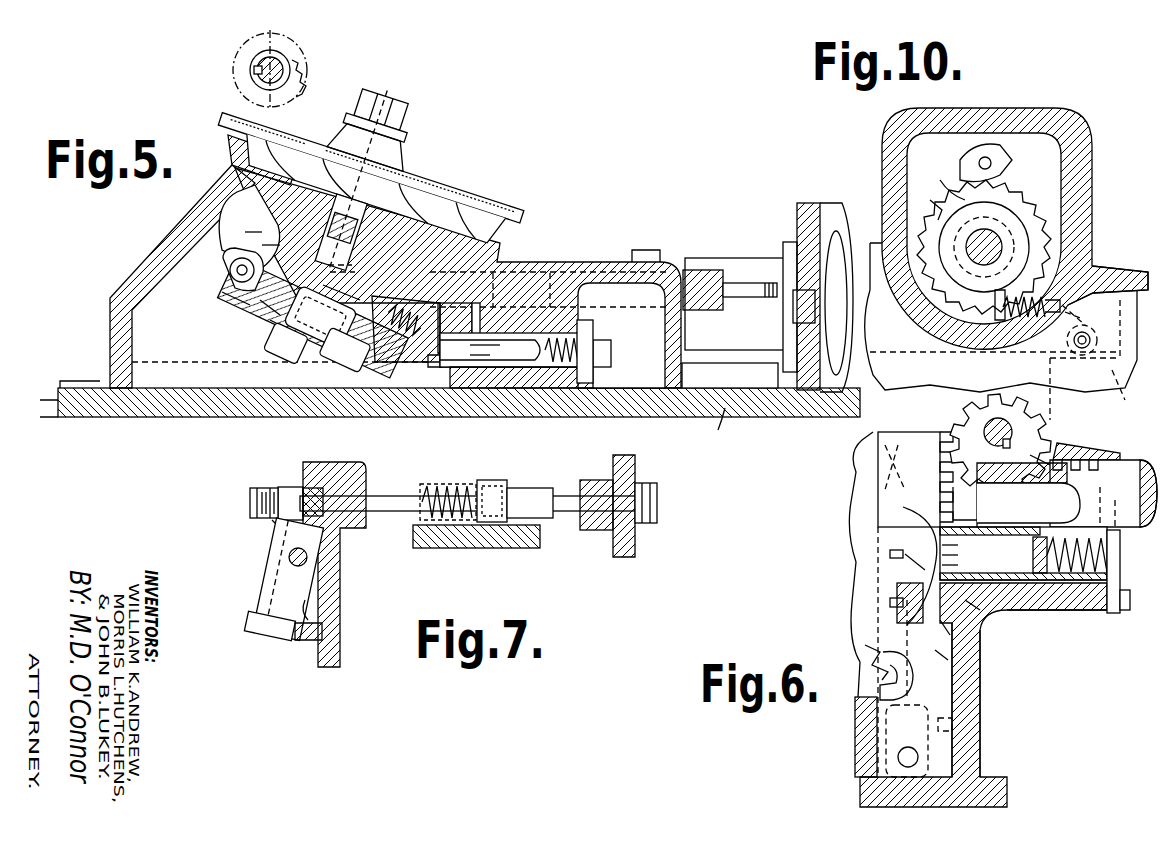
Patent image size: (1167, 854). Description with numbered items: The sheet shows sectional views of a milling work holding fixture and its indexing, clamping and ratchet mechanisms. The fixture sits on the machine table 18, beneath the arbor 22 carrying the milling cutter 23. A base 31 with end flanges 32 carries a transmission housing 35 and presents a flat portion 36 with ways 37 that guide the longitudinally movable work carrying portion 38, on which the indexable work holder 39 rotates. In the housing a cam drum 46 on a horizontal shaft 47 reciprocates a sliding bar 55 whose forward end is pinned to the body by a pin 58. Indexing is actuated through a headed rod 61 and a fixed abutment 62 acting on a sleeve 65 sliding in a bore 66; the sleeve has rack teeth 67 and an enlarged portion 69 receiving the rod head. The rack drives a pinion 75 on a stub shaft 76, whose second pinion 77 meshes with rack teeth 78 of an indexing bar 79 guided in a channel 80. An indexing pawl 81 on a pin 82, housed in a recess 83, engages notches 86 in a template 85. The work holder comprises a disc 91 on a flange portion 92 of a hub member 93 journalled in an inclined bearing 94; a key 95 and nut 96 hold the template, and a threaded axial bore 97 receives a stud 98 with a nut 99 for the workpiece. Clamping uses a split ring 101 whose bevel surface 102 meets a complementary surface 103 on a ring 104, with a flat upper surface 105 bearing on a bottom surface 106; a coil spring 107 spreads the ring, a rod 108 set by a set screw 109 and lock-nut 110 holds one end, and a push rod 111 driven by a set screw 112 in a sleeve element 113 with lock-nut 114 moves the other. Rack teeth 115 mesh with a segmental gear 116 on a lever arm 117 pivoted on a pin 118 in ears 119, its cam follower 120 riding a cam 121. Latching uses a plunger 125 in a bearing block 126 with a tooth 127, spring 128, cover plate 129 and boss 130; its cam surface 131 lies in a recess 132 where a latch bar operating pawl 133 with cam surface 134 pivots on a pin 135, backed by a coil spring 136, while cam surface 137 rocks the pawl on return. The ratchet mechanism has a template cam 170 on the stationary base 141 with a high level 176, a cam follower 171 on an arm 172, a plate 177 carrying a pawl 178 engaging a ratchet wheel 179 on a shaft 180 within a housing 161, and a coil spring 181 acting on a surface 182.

In FIG. 5, the table 18 is at (52, 416).
In FIG. 5, the arbor 22 is at (283, 59).
In FIG. 5, the milling cutter 23 is at (306, 86).
In FIG. 5, the base 31 is at (200, 412).
In FIG. 5, the end flanges 32 is at (72, 386).
In FIG. 5, the transmission housing 35 is at (818, 202).
In FIG. 5, the flat portion 36 is at (720, 362).
In FIG. 5, the ways 37 is at (733, 428).
In FIG. 5, the work carrying portion 38 is at (183, 224).
In FIG. 7, the work carrying portion 38 is at (345, 471).
In FIG. 6, the work carrying portion 38 is at (975, 689).
In FIG. 10, the work carrying portion 38 is at (1122, 272).
In FIG. 5, the work holder 39 is at (226, 140).
In FIG. 5, the cam drum 46 is at (795, 242).
In FIG. 5, the horizontal shaft 47 is at (796, 318).
In FIG. 5, the sliding bar 55 is at (728, 267).
In FIG. 5, the pin 58 is at (646, 250).
In FIG. 5, the headed rod 61 is at (742, 298).
In FIG. 5, the fixed abutment 62 is at (770, 298).
In FIG. 5, the sleeve 65 is at (705, 310).
In FIG. 6, the sleeve 65 is at (1125, 469).
In FIG. 6, the bore 66 is at (1107, 505).
In FIG. 6, the rack teeth 67 is at (1080, 454).
In FIG. 6, the enlarged portion 69 is at (1010, 485).
In FIG. 6, the pinion 75 is at (1036, 459).
In FIG. 6, the stub shaft 76 is at (1005, 454).
In FIG. 6, the second pinion 77 is at (958, 457).
In FIG. 6, the rack teeth 78 is at (965, 503).
In FIG. 5, the indexing bar 79 is at (475, 314).
In FIG. 6, the indexing bar 79 is at (915, 459).
In FIG. 5, the channel 80 is at (448, 304).
In FIG. 6, the channel 80 is at (858, 728).
In FIG. 6, the indexing pawl 81 is at (882, 662).
In FIG. 6, the pin 82 is at (908, 757).
In FIG. 6, the recess 83 is at (866, 648).
In FIG. 5, the template 85 is at (372, 365).
In FIG. 7, the template 85 is at (465, 548).
In FIG. 6, the template 85 is at (860, 489).
In FIG. 5, the notches 86 is at (215, 299).
In FIG. 6, the notches 86 is at (856, 624).
In FIG. 5, the disc 91 is at (500, 235).
In FIG. 5, the flange portion 92 is at (249, 226).
In FIG. 5, the hub member 93 is at (254, 224).
In FIG. 5, the bearing 94 is at (262, 239).
In FIG. 5, the key 95 is at (305, 323).
In FIG. 5, the nut 96 is at (272, 340).
In FIG. 5, the threaded axial bore 97 is at (357, 181).
In FIG. 5, the stud 98 is at (394, 97).
In FIG. 5, the nut 99 is at (415, 117).
In FIG. 5, the split ring 101 is at (230, 254).
In FIG. 7, the split ring 101 is at (512, 492).
In FIG. 5, the bevel surface 102 is at (353, 300).
In FIG. 5, the complementary surface 103 is at (262, 307).
In FIG. 5, the ring 104 is at (265, 327).
In FIG. 5, the flat upper surface 105 is at (360, 275).
In FIG. 5, the bottom surface 106 is at (361, 285).
In FIG. 5, the coil spring 107 is at (228, 267).
In FIG. 7, the coil spring 107 is at (455, 488).
In FIG. 7, the rod 108 is at (560, 520).
In FIG. 7, the set screw 109 is at (606, 532).
In FIG. 7, the lock-nut 110 is at (648, 490).
In FIG. 7, the push rod 111 is at (384, 512).
In FIG. 7, the set screw 112 is at (286, 486).
In FIG. 7, the sleeve element 113 is at (311, 486).
In FIG. 7, the lock-nut 114 is at (262, 486).
In FIG. 7, the rack teeth 115 is at (280, 520).
In FIG. 7, the segmental gear 116 is at (278, 530).
In FIG. 7, the lever arm 117 is at (270, 600).
In FIG. 7, the pin 118 is at (288, 562).
In FIG. 7, the ears 119 is at (315, 604).
In FIG. 7, the cam follower 120 is at (266, 632).
In FIG. 7, the cam 121 is at (302, 640).
In FIG. 5, the latching plunger 125 is at (470, 368).
In FIG. 6, the latching plunger 125 is at (1005, 535).
In FIG. 5, the bearing block 126 is at (512, 368).
In FIG. 6, the bearing block 126 is at (1068, 535).
In FIG. 5, the tooth 127 is at (434, 367).
In FIG. 6, the tooth 127 is at (890, 554).
In FIG. 5, the coil spring 128 is at (556, 390).
In FIG. 6, the coil spring 128 is at (1085, 612).
In FIG. 5, the cover plate 129 is at (595, 377).
In FIG. 6, the cover plate 129 is at (1118, 614).
In FIG. 6, the boss 130 is at (1050, 611).
In FIG. 5, the cam surface 131 is at (494, 355).
In FIG. 6, the cam surface 131 is at (966, 555).
In FIG. 5, the recess 132 is at (499, 341).
In FIG. 6, the recess 132 is at (950, 635).
In FIG. 6, the latch bar operating pawl 133 is at (950, 660).
In FIG. 6, the cam surface 134 is at (966, 567).
In FIG. 6, the pin 135 is at (955, 723).
In FIG. 6, the coil spring 136 is at (970, 615).
In FIG. 6, the cam surface 137 is at (966, 544).
In FIG. 10, the stationary base 141 is at (1088, 387).
In FIG. 10, the housing 161 is at (885, 143).
In FIG. 10, the template cam 170 is at (1128, 392).
In FIG. 10, the cam follower 171 is at (1095, 335).
In FIG. 10, the arm 172 is at (1095, 310).
In FIG. 10, the high level 176 is at (1102, 360).
In FIG. 10, the plate 177 is at (948, 185).
In FIG. 10, the pawl 178 is at (962, 161).
In FIG. 10, the ratchet wheel 179 is at (940, 204).
In FIG. 10, the shaft 180 is at (986, 231).
In FIG. 10, the coil spring 181 is at (1003, 289).
In FIG. 10, the surface 182 is at (1013, 307).